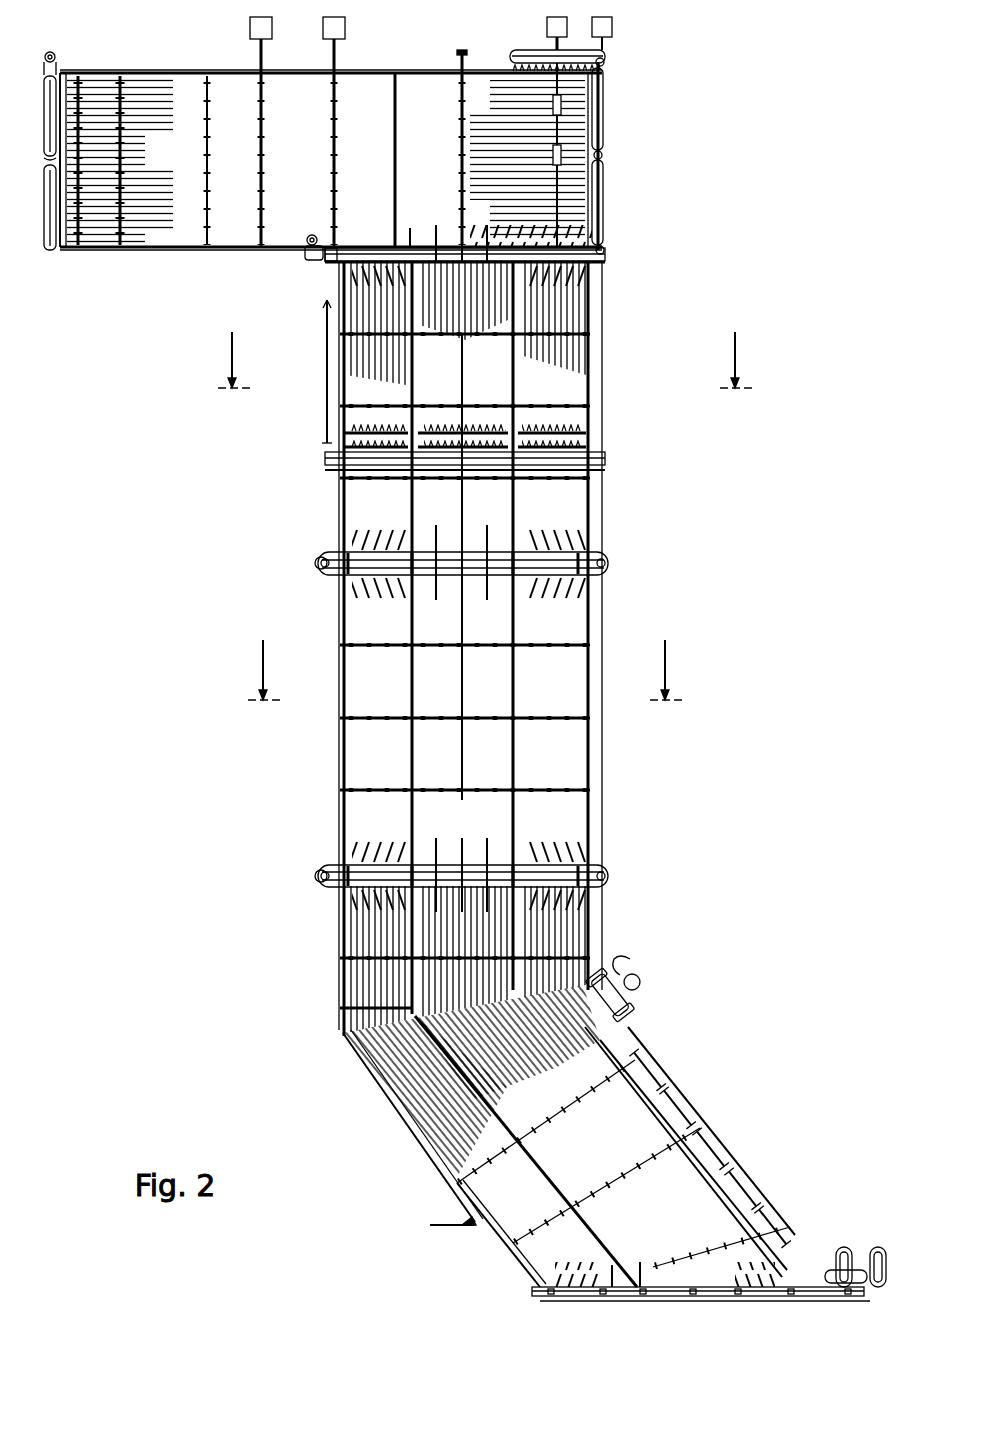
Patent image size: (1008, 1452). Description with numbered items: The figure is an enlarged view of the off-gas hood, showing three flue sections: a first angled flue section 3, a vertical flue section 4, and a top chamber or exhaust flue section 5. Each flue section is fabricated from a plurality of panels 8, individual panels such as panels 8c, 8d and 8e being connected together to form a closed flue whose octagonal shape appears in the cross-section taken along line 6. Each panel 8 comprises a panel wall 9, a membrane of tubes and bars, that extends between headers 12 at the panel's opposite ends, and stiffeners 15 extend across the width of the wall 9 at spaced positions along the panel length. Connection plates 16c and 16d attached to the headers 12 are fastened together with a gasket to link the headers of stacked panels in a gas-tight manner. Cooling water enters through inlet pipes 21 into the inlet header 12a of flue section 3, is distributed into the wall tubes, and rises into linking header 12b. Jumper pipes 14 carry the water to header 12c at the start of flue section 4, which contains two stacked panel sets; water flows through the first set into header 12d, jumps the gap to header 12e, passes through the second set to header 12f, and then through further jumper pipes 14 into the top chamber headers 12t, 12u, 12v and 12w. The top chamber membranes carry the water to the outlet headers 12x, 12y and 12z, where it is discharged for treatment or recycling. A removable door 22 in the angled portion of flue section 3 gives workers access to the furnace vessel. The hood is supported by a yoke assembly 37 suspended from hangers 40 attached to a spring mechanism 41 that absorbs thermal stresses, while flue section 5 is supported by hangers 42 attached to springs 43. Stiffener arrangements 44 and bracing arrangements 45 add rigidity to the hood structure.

The flue section 3 is at (300, 1092).
The flue section 4 is at (210, 658).
The flue section 5 is at (150, 330).
The section line 6 is at (466, 657).
The panel 8 is at (372, 105).
The panel 8c is at (540, 388).
The panel 8d is at (540, 388).
The panel 8e is at (370, 385).
The panel wall 9 is at (155, 78).
The header 12 is at (580, 865).
The inlet header 12a is at (535, 1290).
The linking header 12b is at (320, 882).
The linking header 12c is at (320, 868).
The header 12d is at (320, 570).
The header 12e is at (320, 555).
The header 12f is at (320, 262).
The header 12t is at (604, 190).
The header 12u is at (604, 100).
The header 12v is at (530, 50).
The header 12w is at (310, 234).
The outlet header 12x is at (48, 250).
The outlet header 12y is at (58, 98).
The outlet header 12z is at (53, 52).
The jumper pipe 14 is at (52, 60).
The stiffener 15 is at (460, 160).
The connection plate 16c is at (500, 300).
The connection plate 16d is at (462, 247).
The inlet pipe 21 is at (550, 1296).
The door 22 is at (700, 1140).
The yoke assembly 37 is at (325, 458).
The hanger 40 is at (380, 372).
The spring mechanism 41 is at (612, 28).
The hanger 42 is at (333, 170).
The spring 43 is at (250, 28).
The stiffener arrangement 44 is at (440, 228).
The bracing arrangement 45 is at (435, 1226).